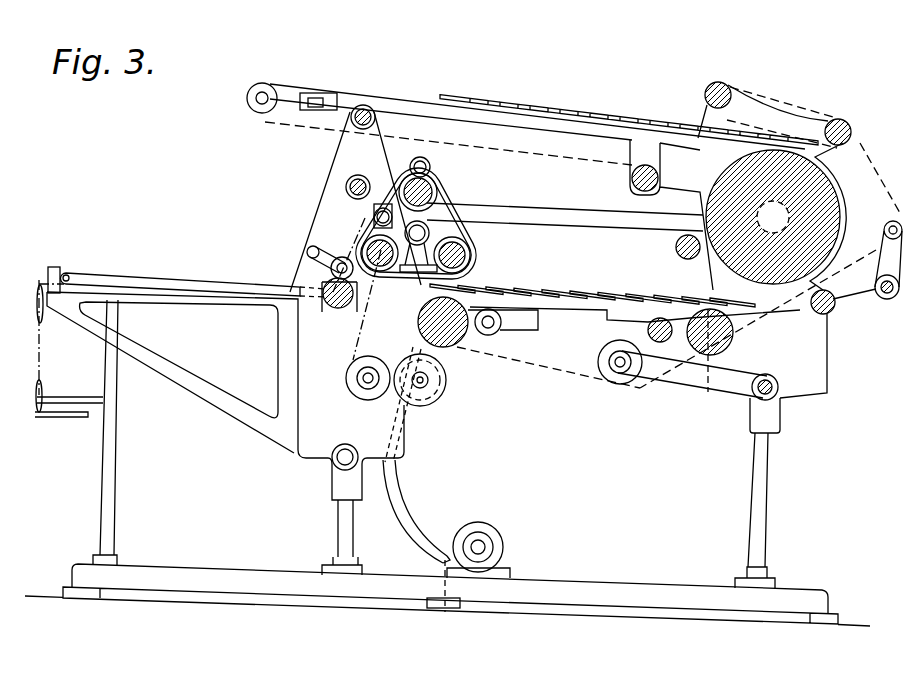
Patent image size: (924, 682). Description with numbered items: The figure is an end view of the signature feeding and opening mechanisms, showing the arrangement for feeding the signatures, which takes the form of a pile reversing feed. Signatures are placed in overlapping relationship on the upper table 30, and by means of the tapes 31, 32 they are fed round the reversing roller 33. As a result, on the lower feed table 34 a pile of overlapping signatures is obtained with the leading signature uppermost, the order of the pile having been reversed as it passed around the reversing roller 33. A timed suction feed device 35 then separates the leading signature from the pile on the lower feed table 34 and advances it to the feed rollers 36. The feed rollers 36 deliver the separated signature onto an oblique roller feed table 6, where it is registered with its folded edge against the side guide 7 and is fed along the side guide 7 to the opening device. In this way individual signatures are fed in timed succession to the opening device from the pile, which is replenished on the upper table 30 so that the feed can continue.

The oblique roller feed table 6 is at (118, 280).
The side guide 7 is at (58, 267).
The upper table 30 is at (405, 103).
The tape 31 is at (778, 96).
The tape 32 is at (510, 148).
The reversing roller 33 is at (830, 185).
The lower feed table 34 is at (558, 310).
The timed suction feed device 35 is at (473, 245).
The feed rollers 36 is at (305, 278).